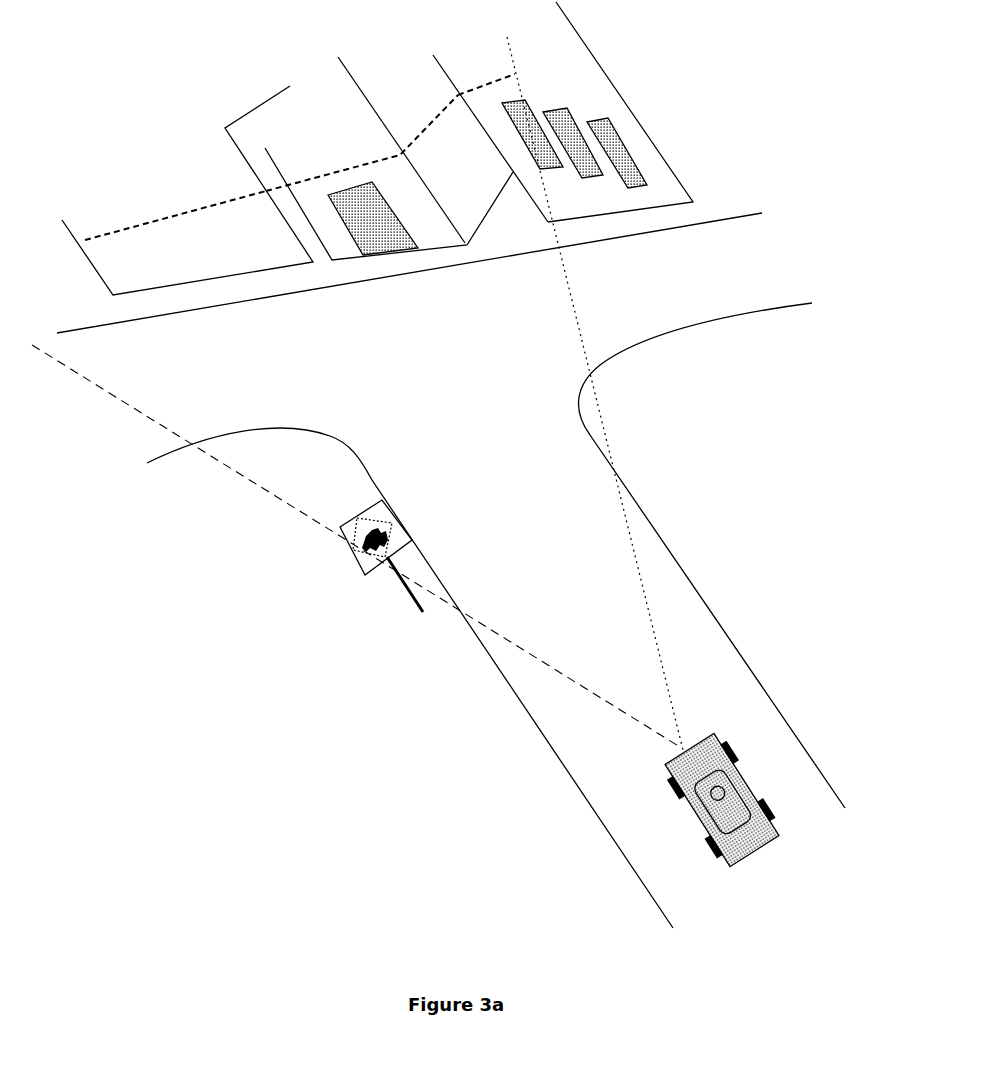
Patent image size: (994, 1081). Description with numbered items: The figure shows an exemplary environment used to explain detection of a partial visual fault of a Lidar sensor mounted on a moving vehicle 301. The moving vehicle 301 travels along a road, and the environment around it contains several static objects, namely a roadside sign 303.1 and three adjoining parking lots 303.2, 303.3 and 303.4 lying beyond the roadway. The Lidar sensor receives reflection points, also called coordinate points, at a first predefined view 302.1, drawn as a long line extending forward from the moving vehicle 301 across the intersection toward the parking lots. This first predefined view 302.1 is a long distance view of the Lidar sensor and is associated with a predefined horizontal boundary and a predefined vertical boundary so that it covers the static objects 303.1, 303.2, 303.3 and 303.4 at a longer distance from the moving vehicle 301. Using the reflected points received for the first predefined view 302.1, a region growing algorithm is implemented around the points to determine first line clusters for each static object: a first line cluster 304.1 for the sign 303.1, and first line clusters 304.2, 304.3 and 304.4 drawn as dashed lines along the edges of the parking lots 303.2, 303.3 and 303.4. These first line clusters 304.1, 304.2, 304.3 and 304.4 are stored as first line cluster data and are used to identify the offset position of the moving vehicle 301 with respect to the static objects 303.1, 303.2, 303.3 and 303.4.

The moving vehicle 301 is at (665, 766).
The first predefined view 302.1 is at (606, 424).
The static object 303.1 is at (359, 573).
The static object 303.2 is at (595, 54).
The static object 303.3 is at (379, 103).
The static object 303.4 is at (90, 270).
The first line cluster 304.1 is at (371, 521).
The first line cluster 304.2 is at (487, 79).
The first line cluster 304.3 is at (330, 172).
The first line cluster 304.4 is at (193, 209).